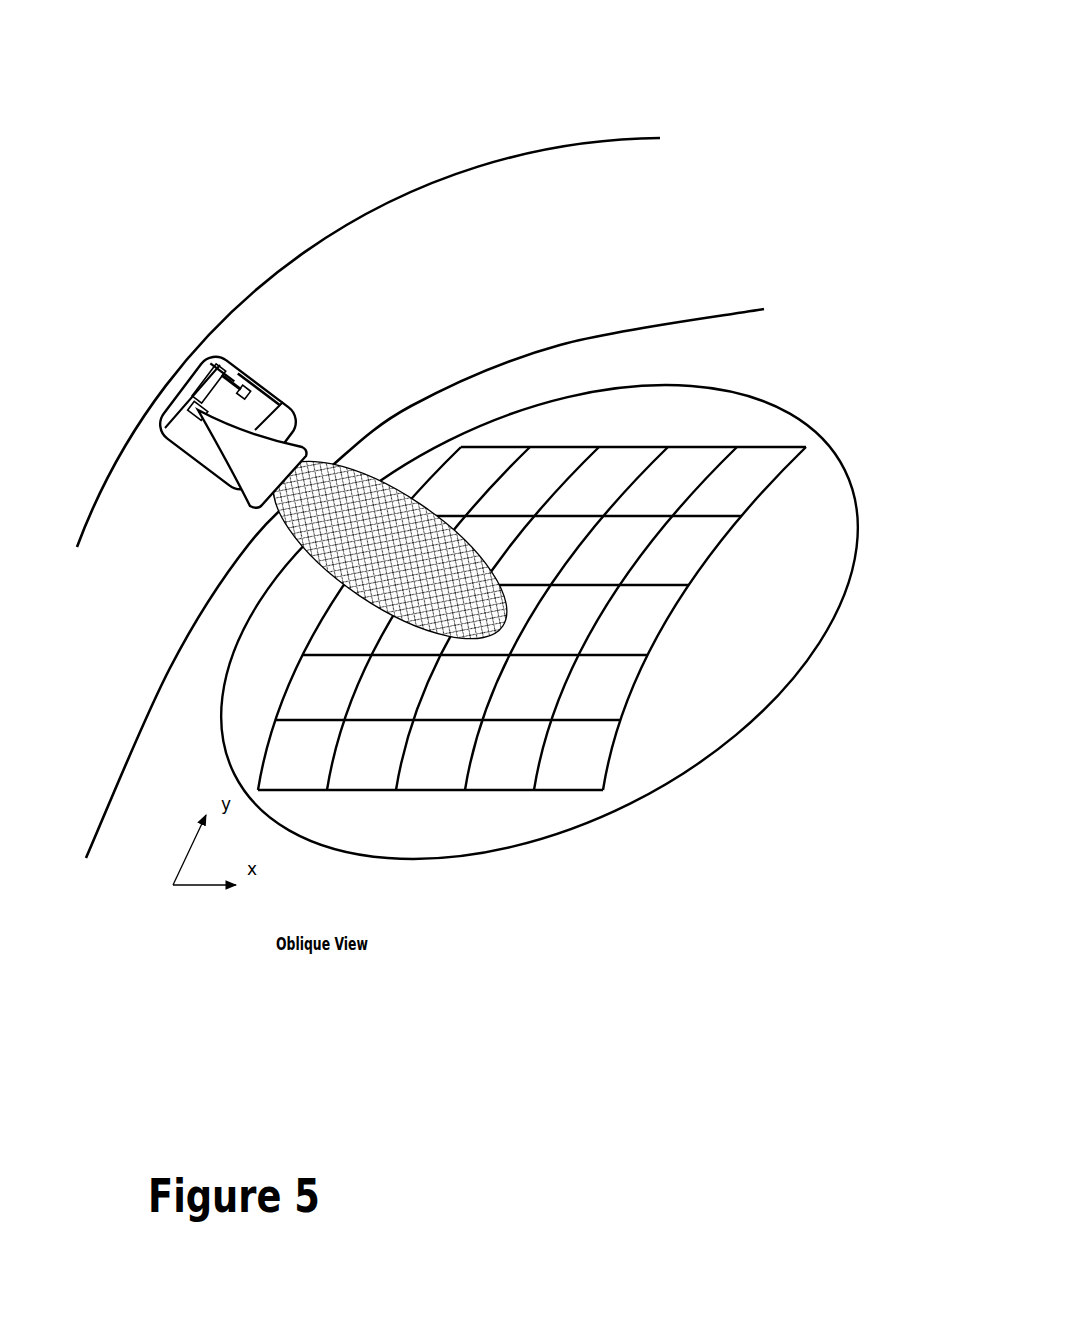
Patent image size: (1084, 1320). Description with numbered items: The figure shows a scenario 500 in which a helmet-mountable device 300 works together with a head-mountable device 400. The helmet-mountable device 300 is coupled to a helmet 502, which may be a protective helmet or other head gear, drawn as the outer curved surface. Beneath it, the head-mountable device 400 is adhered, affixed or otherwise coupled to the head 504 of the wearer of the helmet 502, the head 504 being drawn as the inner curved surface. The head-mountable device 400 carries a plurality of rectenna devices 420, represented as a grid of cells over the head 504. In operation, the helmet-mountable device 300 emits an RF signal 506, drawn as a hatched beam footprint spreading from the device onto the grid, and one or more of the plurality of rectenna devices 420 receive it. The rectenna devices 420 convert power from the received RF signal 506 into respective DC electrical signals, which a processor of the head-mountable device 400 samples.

The scenario 500 is at (453, 436).
The helmet 502 is at (584, 145).
The head 504 is at (590, 335).
The RF signal 506 is at (350, 471).
The helmet-mountable device 300 is at (291, 368).
The head-mountable device 400 is at (864, 443).
The plurality of rectenna devices 420 is at (690, 447).